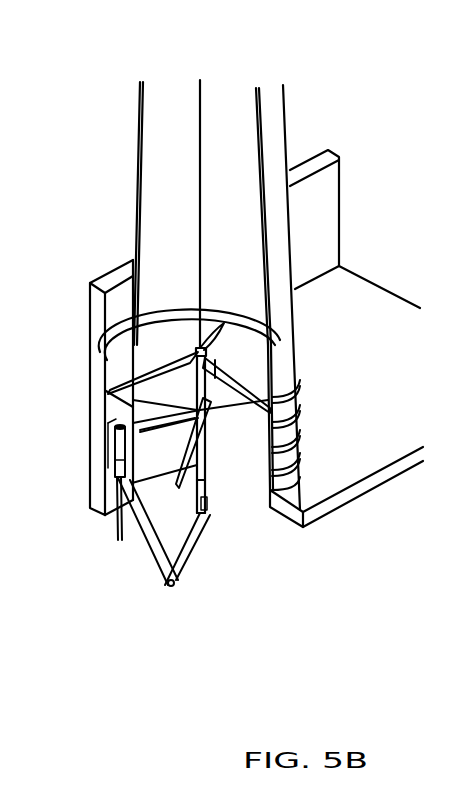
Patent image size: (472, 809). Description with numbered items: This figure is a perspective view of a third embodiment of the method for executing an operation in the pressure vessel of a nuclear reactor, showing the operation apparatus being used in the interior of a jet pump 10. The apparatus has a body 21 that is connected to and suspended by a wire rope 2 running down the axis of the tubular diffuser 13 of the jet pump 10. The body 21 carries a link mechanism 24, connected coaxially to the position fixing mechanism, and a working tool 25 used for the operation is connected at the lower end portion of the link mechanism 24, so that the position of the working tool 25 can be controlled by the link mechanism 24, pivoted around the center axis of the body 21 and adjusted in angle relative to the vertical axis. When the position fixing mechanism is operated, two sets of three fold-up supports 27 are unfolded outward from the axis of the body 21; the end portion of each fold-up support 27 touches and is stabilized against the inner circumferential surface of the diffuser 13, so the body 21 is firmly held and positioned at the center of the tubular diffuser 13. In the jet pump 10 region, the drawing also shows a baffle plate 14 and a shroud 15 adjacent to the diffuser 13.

The wire rope 2 is at (200, 95).
The tubular diffuser 13 is at (270, 122).
The shroud 15 is at (325, 214).
The baffle plate 14 is at (355, 296).
The jet pump 10 is at (100, 475).
The body 21 is at (130, 367).
The fold-up supports 27 is at (255, 375).
The working tool 25 is at (110, 436).
The link mechanism 24 is at (210, 510).